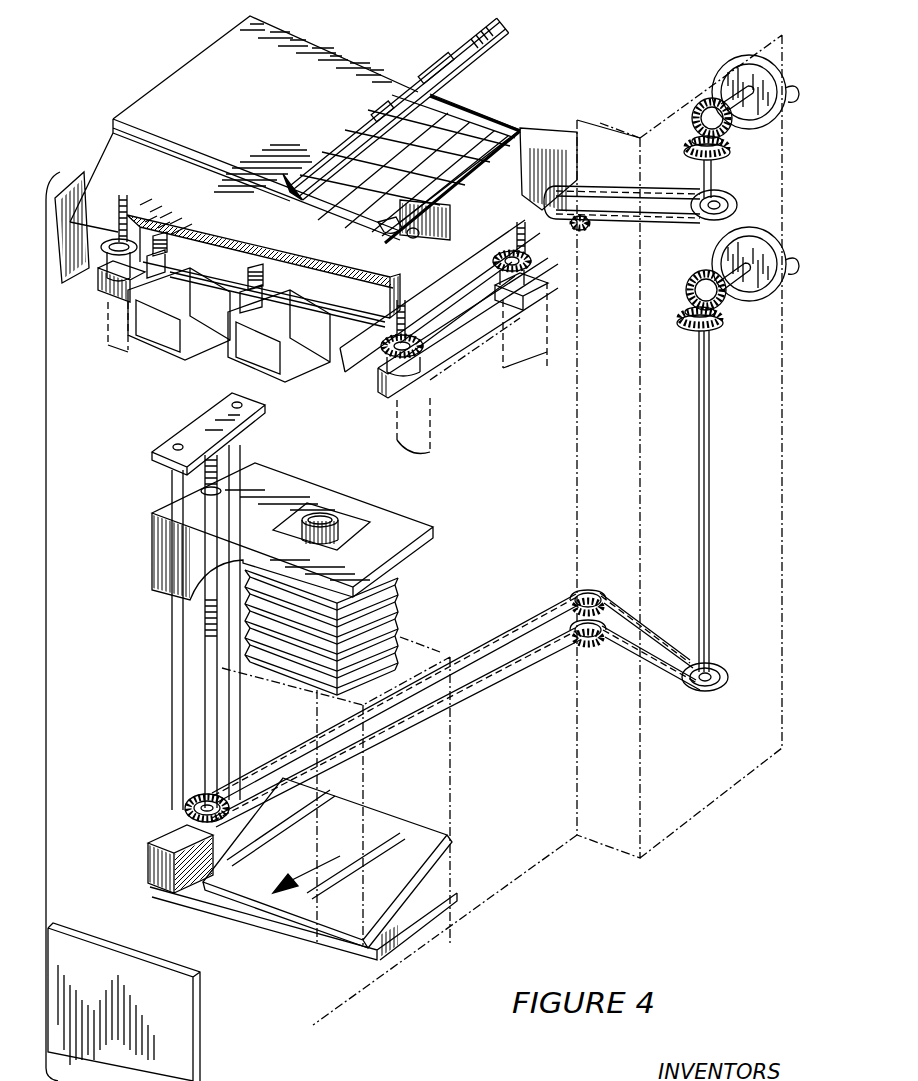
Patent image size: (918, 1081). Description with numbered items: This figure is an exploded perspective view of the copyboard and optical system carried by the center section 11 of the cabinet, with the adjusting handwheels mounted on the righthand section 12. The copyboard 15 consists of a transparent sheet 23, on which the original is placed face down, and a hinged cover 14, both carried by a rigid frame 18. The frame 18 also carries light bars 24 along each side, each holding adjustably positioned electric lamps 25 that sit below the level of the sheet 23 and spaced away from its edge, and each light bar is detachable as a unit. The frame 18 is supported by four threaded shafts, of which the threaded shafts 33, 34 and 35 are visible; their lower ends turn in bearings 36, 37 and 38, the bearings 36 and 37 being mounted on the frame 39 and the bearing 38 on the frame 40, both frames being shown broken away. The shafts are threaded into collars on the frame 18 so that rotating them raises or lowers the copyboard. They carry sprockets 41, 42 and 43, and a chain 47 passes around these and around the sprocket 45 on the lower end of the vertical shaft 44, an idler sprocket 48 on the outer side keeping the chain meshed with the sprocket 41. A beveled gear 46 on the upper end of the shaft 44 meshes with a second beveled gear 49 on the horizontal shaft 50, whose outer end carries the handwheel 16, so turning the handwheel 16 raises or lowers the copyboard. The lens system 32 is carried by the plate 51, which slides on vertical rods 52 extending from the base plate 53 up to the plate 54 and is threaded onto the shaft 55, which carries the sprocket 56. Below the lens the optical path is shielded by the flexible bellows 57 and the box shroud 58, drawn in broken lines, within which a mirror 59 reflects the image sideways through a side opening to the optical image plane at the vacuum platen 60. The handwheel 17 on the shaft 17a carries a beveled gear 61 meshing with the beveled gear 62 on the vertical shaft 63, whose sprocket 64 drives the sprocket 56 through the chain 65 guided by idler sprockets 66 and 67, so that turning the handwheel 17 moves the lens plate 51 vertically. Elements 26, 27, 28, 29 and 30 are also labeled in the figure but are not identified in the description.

The center section 11 is at (480, 878).
The righthand section 12 is at (778, 742).
The hinged cover 14 is at (195, 85).
The copyboard 15 is at (472, 125).
The handwheel 16 is at (728, 62).
The handwheel 17 is at (730, 238).
The shaft 17a is at (740, 292).
The rigid frame 18 is at (125, 165).
The transparent sheet 23 is at (497, 132).
The light bar 24 is at (322, 345).
The electric lamp 25 is at (235, 340).
The platen frame edge 26 is at (468, 173).
The carriage frame 27 is at (440, 284).
The nut 28 is at (412, 238).
The edge 29 is at (322, 202).
The base bar 30 is at (378, 224).
The lens system 32 is at (338, 512).
The threaded shaft 33 is at (517, 238).
The threaded shaft 34 is at (406, 318).
The threaded shaft 35 is at (130, 215).
The bearing 36 is at (505, 278).
The bearing 37 is at (375, 370).
The bearing 38 is at (115, 272).
The frame 39 is at (398, 430).
The frame 40 is at (118, 328).
The sprocket 41 is at (505, 258).
The sprocket 42 is at (420, 337).
The sprocket 43 is at (118, 240).
The vertical shaft 44 is at (718, 180).
The sprocket 45 is at (728, 199).
The beveled gear 46 is at (685, 150).
The chain 47 is at (604, 188).
The idler sprocket 48 is at (582, 232).
The beveled gear 49 is at (697, 115).
The horizontal shaft 50 is at (735, 90).
The plate 51 is at (400, 528).
The vertical rod 52 is at (240, 450).
The base plate 53 is at (147, 878).
The plate 54 is at (200, 432).
The shaft 55 is at (205, 640).
The sprocket 56 is at (203, 808).
The flexible bellows 57 is at (400, 605).
The box shroud 58 is at (452, 782).
The mirror 59 is at (303, 869).
The vacuum platen 60 is at (180, 1018).
The beveled gear 61 is at (702, 282).
The beveled gear 62 is at (697, 342).
The vertical shaft 63 is at (712, 505).
The sprocket 64 is at (715, 668).
The chain 65 is at (503, 633).
The idler sprocket 66 is at (590, 650).
The idler sprocket 67 is at (590, 592).